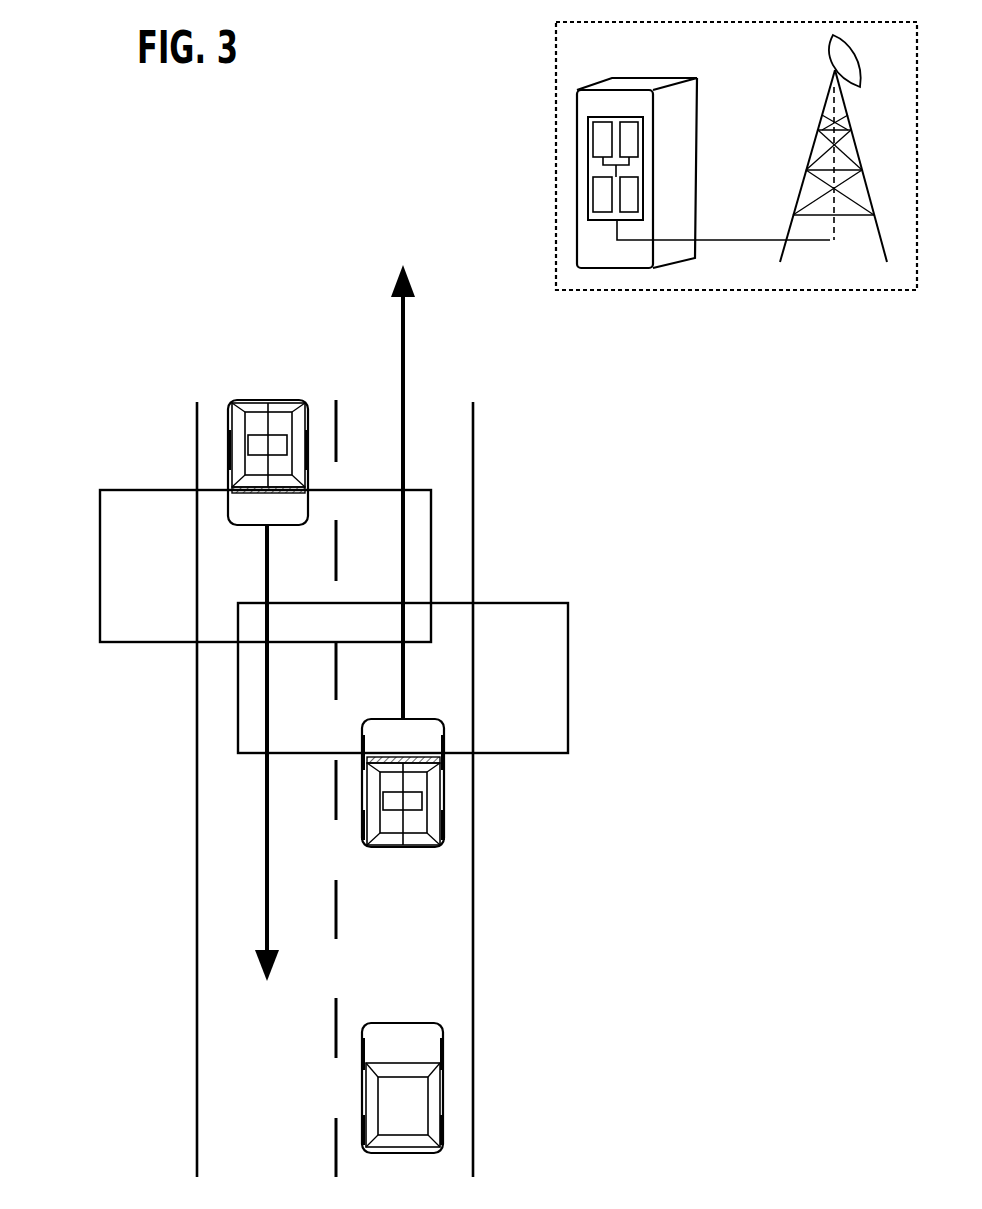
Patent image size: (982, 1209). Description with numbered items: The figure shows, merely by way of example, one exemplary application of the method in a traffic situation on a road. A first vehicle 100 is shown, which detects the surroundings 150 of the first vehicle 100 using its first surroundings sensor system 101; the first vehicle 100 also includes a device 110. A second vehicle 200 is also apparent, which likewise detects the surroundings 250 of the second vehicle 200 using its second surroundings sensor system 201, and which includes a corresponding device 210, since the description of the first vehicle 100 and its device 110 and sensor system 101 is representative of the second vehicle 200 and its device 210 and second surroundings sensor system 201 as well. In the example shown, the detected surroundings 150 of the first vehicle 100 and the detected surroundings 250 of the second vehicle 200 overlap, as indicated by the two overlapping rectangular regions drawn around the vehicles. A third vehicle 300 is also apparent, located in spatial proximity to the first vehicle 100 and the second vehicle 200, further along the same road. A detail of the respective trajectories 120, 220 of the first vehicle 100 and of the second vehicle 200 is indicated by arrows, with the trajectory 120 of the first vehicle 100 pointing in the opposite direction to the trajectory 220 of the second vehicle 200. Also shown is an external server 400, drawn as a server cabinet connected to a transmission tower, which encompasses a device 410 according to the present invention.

The first vehicle 100 is at (228, 449).
The first surroundings sensor system 101 is at (268, 402).
The device 110 is at (277, 410).
The trajectory of first vehicle 120 is at (267, 851).
The detected surroundings of first vehicle 150 is at (140, 643).
The second vehicle 200 is at (444, 797).
The second surroundings sensor system 201 is at (427, 765).
The device 210 is at (388, 848).
The trajectory of second vehicle 220 is at (405, 366).
The detected surroundings of second vehicle 250 is at (538, 603).
The third vehicle 300 is at (443, 1086).
The external server 400 is at (748, 292).
The device 410 is at (588, 132).